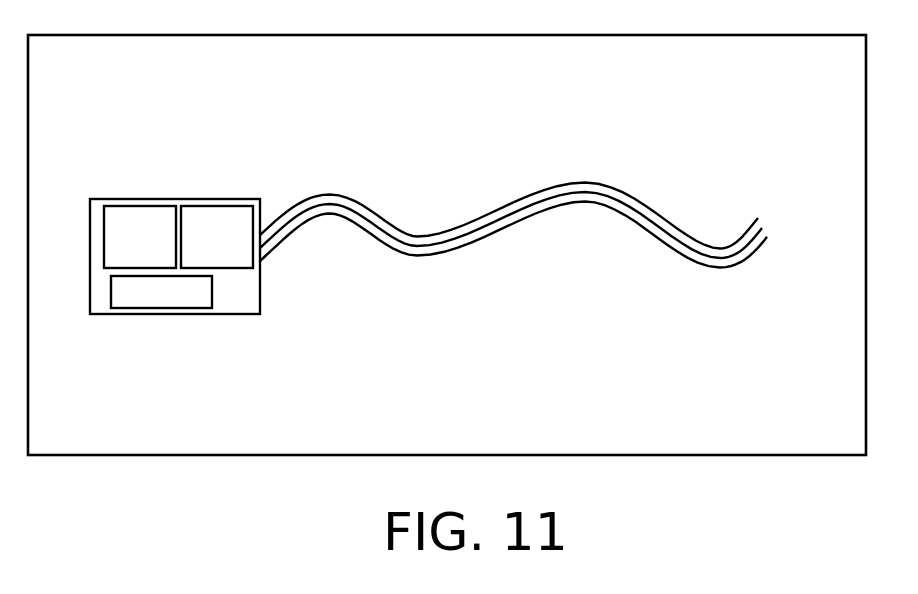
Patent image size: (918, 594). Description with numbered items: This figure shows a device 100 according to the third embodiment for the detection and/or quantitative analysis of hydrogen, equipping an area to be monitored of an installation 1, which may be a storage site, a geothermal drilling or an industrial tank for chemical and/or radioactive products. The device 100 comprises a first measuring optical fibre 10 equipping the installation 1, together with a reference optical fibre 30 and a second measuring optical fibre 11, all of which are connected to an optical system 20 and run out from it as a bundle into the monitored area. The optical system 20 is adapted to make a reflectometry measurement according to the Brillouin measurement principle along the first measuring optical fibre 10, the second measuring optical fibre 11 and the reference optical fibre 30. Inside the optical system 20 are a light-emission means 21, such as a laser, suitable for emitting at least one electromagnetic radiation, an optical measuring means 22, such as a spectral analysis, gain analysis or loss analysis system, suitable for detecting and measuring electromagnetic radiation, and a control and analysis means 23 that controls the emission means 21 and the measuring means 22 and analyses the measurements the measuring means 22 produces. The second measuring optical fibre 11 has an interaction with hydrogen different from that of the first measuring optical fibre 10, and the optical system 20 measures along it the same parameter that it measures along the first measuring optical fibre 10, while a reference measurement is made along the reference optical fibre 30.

The installation 1 is at (273, 456).
The device 100 is at (402, 132).
The optical system 20 is at (260, 300).
The light-emission means 21 is at (135, 204).
The optical measuring means 22 is at (195, 204).
The control and analysis means 23 is at (187, 309).
The reference optical fibre 30 is at (473, 222).
The first measuring optical fibre 10 is at (478, 232).
The second measuring optical fibre 11 is at (552, 208).